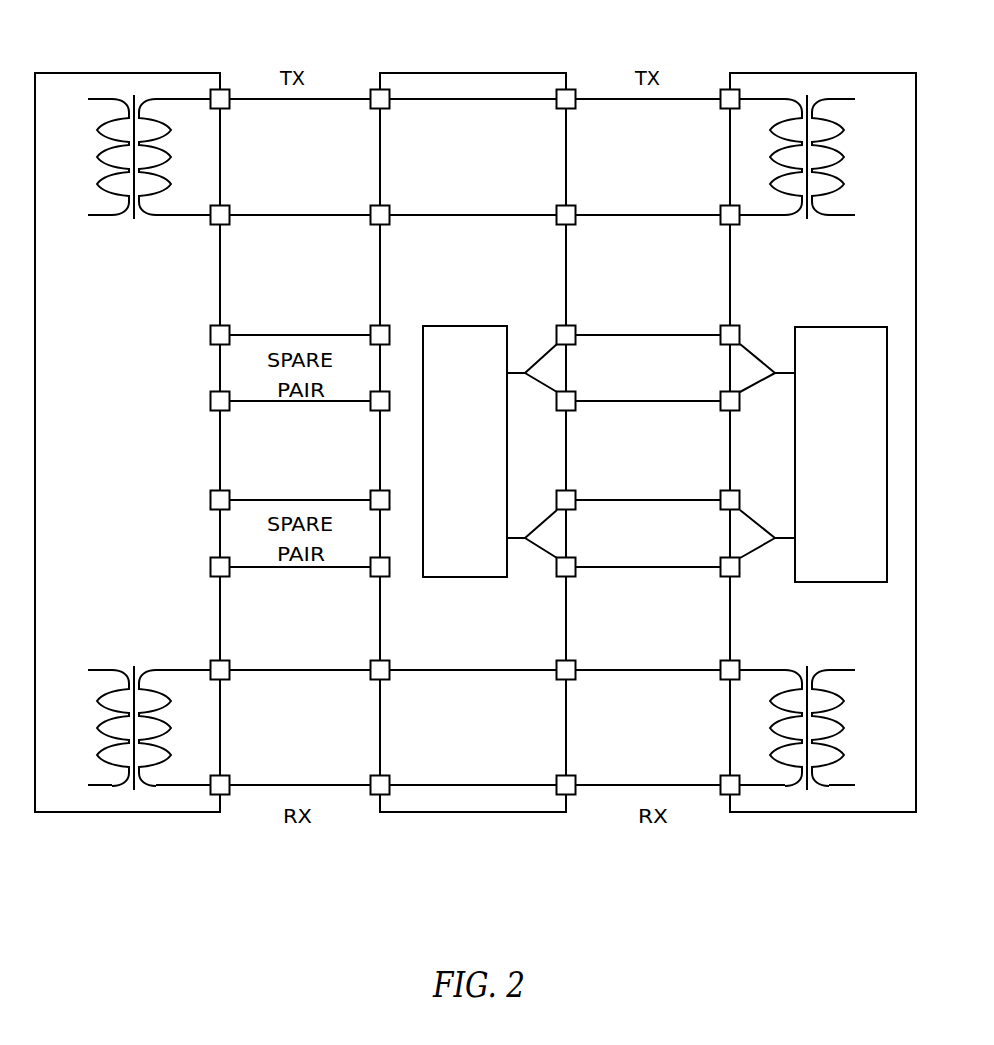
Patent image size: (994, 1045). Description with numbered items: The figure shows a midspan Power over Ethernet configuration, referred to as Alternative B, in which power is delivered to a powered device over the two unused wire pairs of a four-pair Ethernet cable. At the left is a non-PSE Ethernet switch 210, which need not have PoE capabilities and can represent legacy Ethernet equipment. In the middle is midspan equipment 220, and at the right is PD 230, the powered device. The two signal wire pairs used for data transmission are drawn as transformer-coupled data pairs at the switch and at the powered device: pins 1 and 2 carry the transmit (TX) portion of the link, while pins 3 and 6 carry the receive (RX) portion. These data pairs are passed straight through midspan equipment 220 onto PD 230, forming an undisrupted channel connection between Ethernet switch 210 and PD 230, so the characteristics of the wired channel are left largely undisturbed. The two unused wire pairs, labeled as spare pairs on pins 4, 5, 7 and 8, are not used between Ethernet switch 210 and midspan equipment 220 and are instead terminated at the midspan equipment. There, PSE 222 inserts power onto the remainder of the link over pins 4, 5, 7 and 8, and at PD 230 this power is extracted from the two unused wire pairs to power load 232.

The Ethernet switch 210 is at (143, 452).
The midspan equipment 220 is at (473, 452).
The PSE 222 is at (472, 326).
The PD 230 is at (819, 452).
The load 232 is at (842, 327).
The pin 1 (TX+) 1 is at (231, 111).
The pin 2 (TX−) 2 is at (231, 226).
The pin 3 (RX+) 3 is at (231, 682).
The pin 4 is at (231, 349).
The pin 5 is at (231, 416).
The pin 6 (RX−) 6 is at (231, 797).
The pin 7 is at (231, 513).
The pin 8 is at (231, 580).